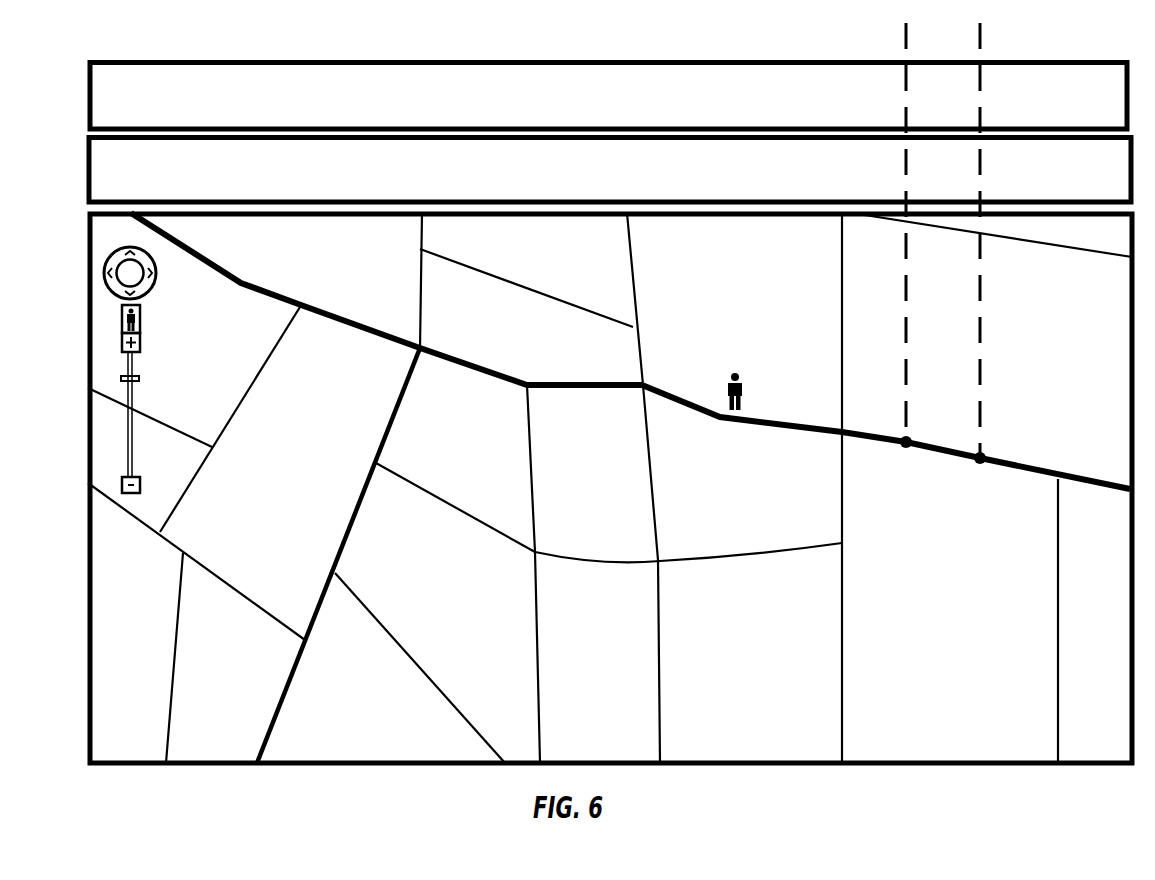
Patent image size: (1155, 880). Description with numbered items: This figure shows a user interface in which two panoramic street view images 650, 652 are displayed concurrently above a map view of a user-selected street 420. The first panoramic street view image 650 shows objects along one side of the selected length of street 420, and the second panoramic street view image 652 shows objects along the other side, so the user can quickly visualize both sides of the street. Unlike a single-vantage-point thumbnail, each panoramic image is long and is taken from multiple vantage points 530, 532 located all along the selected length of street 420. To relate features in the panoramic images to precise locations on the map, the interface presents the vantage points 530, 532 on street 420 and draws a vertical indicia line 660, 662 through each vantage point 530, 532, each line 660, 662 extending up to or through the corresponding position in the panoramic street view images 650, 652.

The panoramic street view image 650 is at (163, 113).
The panoramic street view image 652 is at (163, 186).
The user-selected street 420 is at (255, 284).
The vertical indicia line 662 is at (905, 335).
The vertical indicia line 660 is at (981, 392).
The vantage point 532 is at (907, 447).
The vantage point 530 is at (982, 462).